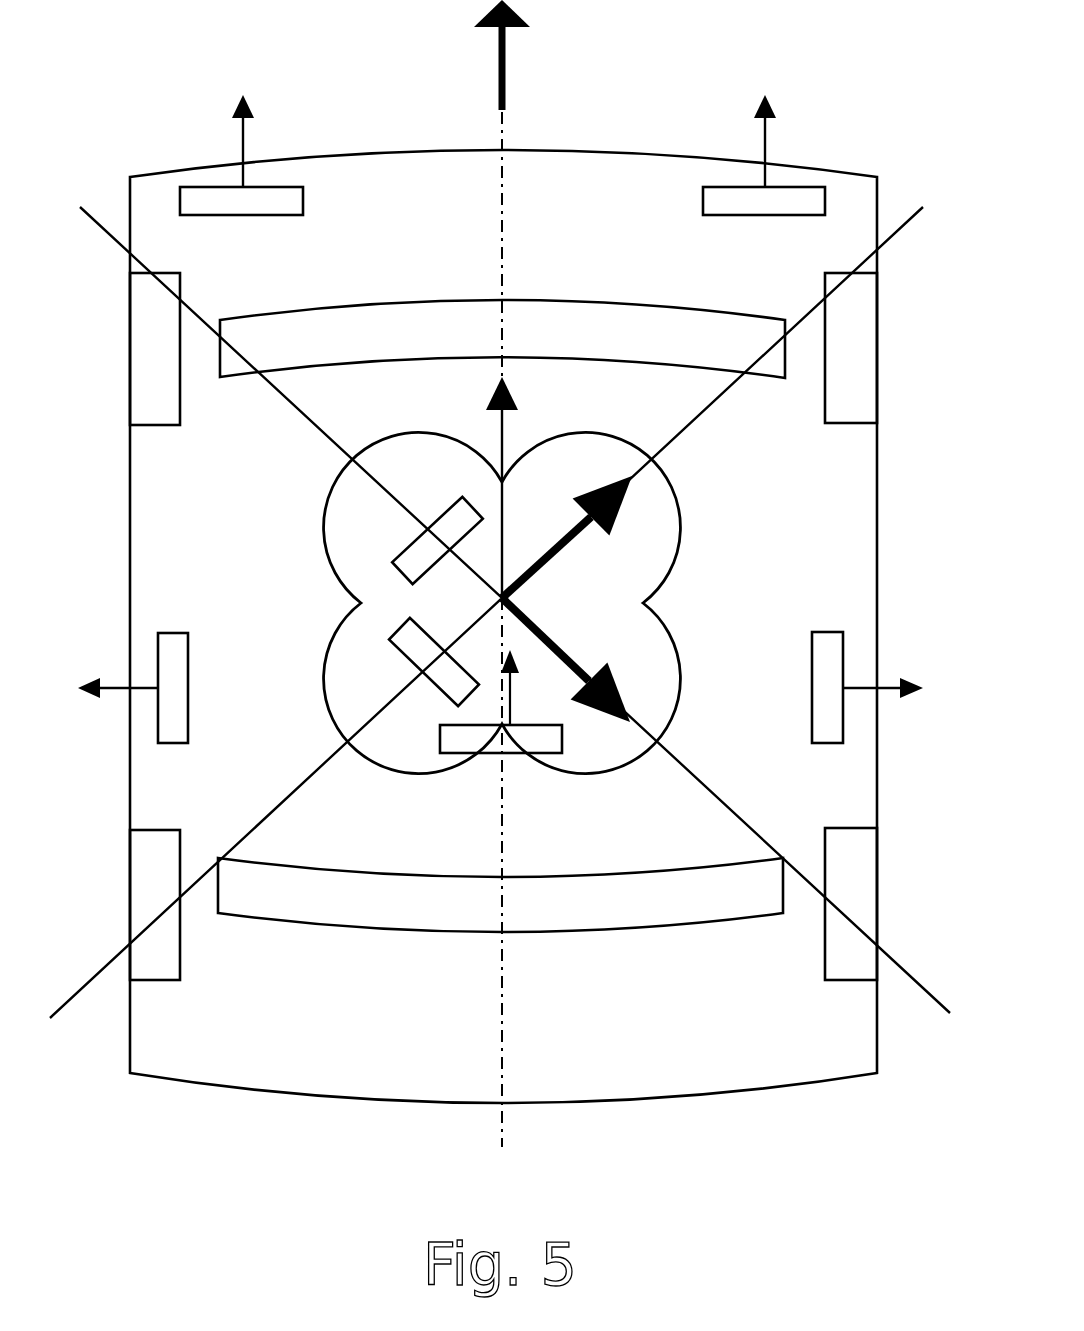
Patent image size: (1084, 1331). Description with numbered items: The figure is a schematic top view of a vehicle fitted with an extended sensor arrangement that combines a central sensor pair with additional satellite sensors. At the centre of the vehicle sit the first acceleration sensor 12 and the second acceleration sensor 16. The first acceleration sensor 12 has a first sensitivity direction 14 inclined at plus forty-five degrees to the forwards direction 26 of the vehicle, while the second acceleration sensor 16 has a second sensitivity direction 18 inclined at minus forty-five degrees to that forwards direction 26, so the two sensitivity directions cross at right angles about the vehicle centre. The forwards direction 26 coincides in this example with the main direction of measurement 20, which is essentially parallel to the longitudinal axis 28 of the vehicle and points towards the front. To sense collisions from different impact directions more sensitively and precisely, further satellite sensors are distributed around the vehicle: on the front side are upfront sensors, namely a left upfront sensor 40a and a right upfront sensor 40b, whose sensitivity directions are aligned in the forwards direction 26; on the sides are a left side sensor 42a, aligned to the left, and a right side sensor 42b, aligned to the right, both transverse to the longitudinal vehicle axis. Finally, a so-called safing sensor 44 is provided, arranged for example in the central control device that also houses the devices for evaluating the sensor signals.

The first acceleration sensor 12 is at (408, 567).
The first sensitivity direction 14 is at (570, 658).
The second acceleration sensor 16 is at (408, 650).
The second sensitivity direction 18 is at (572, 545).
The main direction of measurement 20 is at (506, 513).
The forwards direction 26 is at (508, 62).
The longitudinal axis 28 is at (507, 133).
The left upfront sensor 40a is at (268, 202).
The right upfront sensor 40b is at (748, 205).
The left side sensor 42a is at (177, 707).
The right side sensor 42b is at (827, 707).
The safing sensor 44 is at (513, 753).